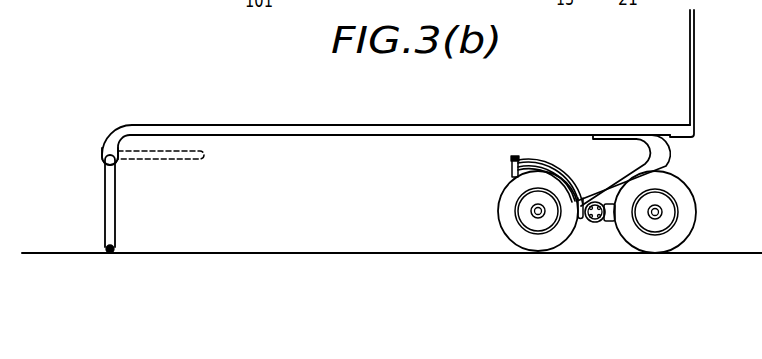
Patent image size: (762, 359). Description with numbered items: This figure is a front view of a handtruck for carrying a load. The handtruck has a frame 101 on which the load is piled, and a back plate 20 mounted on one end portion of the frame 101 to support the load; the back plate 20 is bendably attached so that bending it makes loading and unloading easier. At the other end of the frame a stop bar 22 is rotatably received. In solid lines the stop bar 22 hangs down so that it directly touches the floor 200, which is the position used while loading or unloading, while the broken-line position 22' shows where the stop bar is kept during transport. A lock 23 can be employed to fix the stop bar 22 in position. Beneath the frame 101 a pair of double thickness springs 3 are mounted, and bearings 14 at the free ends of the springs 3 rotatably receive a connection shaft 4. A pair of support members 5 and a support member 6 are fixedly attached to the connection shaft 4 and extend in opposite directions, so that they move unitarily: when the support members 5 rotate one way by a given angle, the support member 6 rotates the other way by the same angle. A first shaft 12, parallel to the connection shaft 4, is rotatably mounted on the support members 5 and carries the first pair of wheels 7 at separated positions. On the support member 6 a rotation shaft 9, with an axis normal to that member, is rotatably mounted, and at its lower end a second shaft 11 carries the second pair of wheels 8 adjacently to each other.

The double thickness spring 3 is at (656, 157).
The connection shaft 4 is at (600, 223).
The support member 5 is at (611, 222).
The support member 6 is at (548, 159).
The first pair of wheels 7 is at (677, 230).
The second pair of wheels 8 is at (519, 230).
The rotation shaft 9 is at (512, 157).
The second shaft 11 is at (536, 218).
The first shaft 12 is at (659, 219).
The bearing 14 is at (580, 220).
The back plate 20 is at (695, 57).
The stop bar 22 is at (133, 189).
The stop bar (transport position) 22' is at (169, 175).
The lock 23 is at (94, 157).
The frame 101 is at (366, 122).
The floor 200 is at (343, 266).